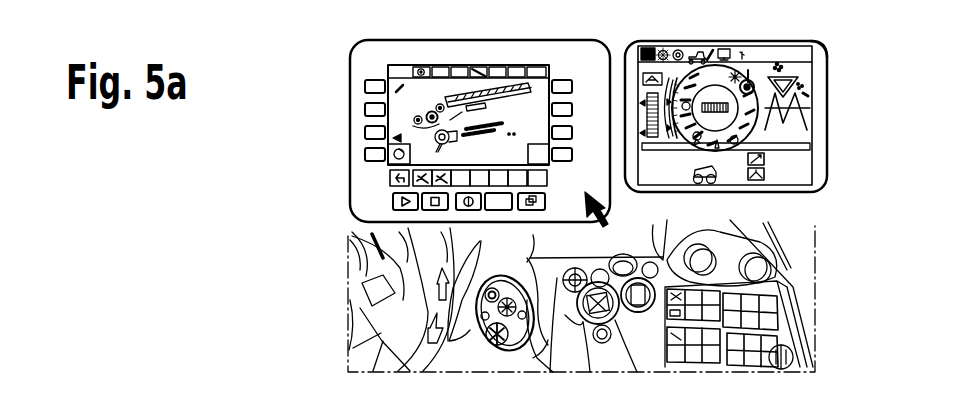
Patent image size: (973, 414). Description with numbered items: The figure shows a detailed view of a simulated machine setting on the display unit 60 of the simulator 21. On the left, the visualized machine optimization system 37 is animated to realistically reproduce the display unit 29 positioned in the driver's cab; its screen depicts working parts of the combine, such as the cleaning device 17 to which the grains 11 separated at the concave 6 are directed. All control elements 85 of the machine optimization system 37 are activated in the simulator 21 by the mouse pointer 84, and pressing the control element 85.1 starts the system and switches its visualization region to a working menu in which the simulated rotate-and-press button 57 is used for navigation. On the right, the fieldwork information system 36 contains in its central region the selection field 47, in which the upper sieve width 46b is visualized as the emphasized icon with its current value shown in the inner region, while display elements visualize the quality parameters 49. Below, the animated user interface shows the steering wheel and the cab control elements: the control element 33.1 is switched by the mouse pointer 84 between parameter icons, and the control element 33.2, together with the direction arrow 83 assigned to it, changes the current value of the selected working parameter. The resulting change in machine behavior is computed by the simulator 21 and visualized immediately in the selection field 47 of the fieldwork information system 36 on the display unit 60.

The simulator 21 is at (289, 49).
The cleaning device 17 is at (472, 126).
The grains 11 is at (513, 131).
The machine optimization system 37 is at (520, 39).
The display unit 29 is at (520, 39).
The control elements 85 is at (341, 80).
The control element 85.1 is at (557, 79).
The mouse pointer 84 is at (604, 207).
The fieldwork information system 36 is at (748, 40).
The upper sieve width 46b is at (742, 62).
The selection field 47 is at (686, 128).
The quality parameters 49 is at (786, 97).
The display unit 60 is at (843, 80).
The direction arrow 83 is at (560, 343).
The control element 33.2 is at (580, 347).
The control element 33.1 is at (620, 333).
The concave 6 is at (8, 413).
The rotate-and-press button 57 is at (210, 413).